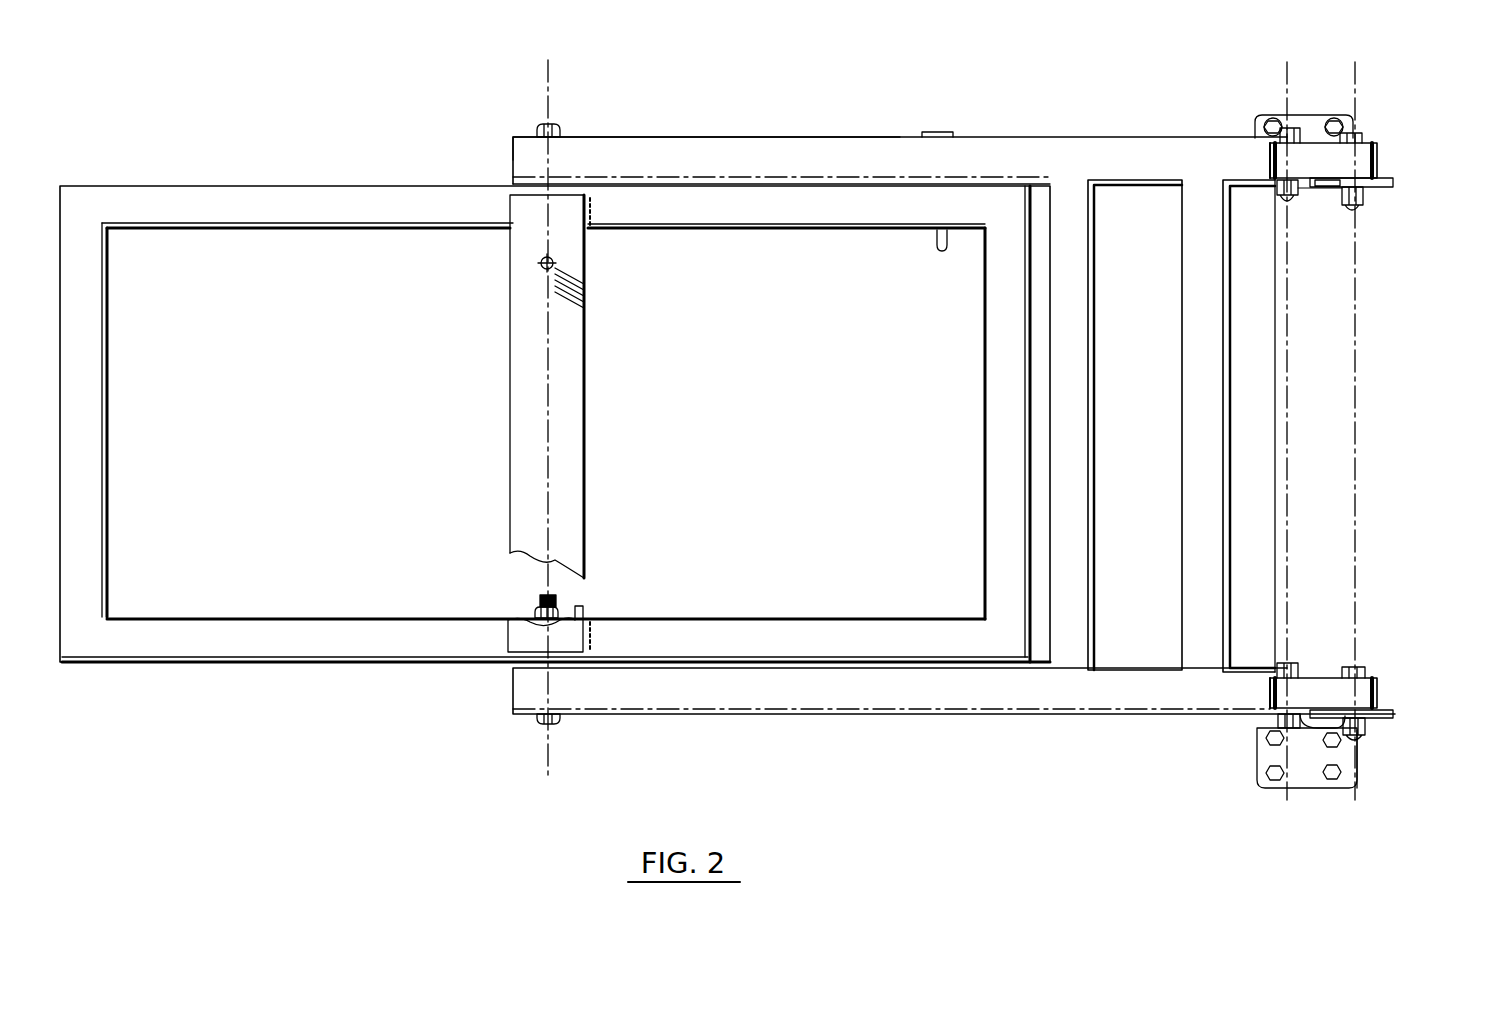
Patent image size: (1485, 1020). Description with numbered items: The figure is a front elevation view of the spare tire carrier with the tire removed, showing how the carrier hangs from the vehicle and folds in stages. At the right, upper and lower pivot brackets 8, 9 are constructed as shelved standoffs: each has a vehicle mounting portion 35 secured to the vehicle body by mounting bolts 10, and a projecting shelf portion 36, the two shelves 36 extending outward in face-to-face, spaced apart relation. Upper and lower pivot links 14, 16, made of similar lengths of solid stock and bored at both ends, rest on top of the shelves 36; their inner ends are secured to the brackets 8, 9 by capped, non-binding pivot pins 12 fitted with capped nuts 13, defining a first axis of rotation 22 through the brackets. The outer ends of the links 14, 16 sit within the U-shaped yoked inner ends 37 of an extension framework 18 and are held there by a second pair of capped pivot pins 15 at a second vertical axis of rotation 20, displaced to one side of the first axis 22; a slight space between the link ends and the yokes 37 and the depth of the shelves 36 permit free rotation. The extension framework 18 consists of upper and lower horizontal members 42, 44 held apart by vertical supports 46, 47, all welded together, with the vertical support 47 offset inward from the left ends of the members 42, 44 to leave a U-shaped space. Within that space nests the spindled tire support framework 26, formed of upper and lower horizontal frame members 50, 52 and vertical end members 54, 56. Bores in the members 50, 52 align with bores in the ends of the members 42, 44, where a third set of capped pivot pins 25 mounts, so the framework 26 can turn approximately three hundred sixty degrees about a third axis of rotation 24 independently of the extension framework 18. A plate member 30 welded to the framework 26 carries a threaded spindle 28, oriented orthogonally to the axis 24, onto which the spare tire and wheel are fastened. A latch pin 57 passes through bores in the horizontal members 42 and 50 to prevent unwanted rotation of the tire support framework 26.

The upper pivot bracket 8 is at (1366, 112).
The lower pivot bracket 9 is at (1360, 782).
The mounting bolts 10 is at (1330, 117).
The capped pivot pins 12 is at (1355, 212).
The capped nuts 13 is at (1342, 200).
The upper pivot link 14 is at (1378, 158).
The capped pivot pins 15 is at (1283, 205).
The lower pivot link 16 is at (1378, 693).
The extension framework 18 is at (716, 133).
The second vertical axis of rotation 20 is at (1282, 416).
The first axis of rotation 22 is at (1350, 416).
The third axis of rotation 24 is at (548, 406).
The capped pivot pins 25 is at (560, 126).
The spindled tire support framework 26 is at (256, 182).
The threaded spindle 28 is at (543, 268).
The plate member 30 is at (586, 405).
The vehicle mounting portion 35 is at (1255, 122).
The shelf portions 36 is at (1393, 183).
The yoked inner ends 37 is at (1270, 155).
The upper horizontal member 42 is at (831, 167).
The lower horizontal member 44 is at (927, 703).
The vertical support 46 is at (1214, 421).
The vertical support 47 is at (1082, 467).
The upper horizontal frame member 50 is at (362, 217).
The lower horizontal frame member 52 is at (332, 647).
The vertical end member 54 is at (1017, 427).
The vertical end member 56 is at (94, 371).
The latch pin 57 is at (950, 132).